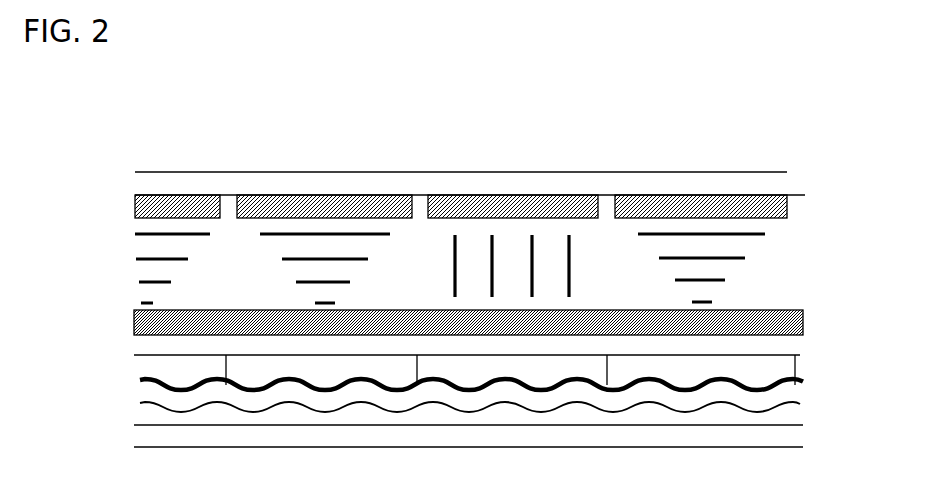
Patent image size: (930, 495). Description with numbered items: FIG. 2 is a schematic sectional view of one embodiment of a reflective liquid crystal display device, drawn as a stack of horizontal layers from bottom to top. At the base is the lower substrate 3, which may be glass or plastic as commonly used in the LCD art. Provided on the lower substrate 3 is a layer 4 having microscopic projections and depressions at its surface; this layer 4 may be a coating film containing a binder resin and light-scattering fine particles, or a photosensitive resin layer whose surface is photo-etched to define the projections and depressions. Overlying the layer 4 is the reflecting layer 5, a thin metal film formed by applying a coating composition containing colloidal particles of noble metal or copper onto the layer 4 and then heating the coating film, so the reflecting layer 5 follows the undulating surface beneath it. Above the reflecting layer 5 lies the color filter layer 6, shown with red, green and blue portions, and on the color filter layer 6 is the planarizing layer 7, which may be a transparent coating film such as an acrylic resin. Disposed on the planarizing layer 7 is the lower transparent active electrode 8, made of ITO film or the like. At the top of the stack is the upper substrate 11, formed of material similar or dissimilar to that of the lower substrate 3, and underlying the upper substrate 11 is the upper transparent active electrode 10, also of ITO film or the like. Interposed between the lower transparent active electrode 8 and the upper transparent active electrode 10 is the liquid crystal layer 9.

The lower substrate 3 is at (785, 436).
The layer having microscopic projections and depressions 4 is at (783, 414).
The reflecting layer 5 is at (787, 393).
The color filter layer 6 is at (800, 368).
The planarizing layer 7 is at (788, 345).
The lower transparent active electrode 8 is at (803, 316).
The liquid crystal layer 9 is at (763, 254).
The upper transparent active electrode 10 is at (787, 207).
The upper substrate 11 is at (785, 182).